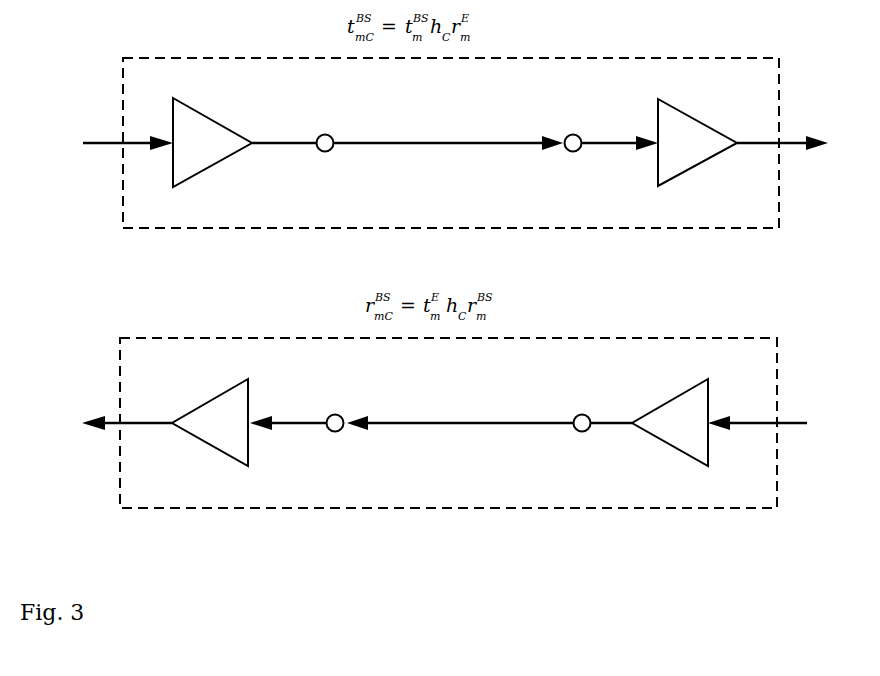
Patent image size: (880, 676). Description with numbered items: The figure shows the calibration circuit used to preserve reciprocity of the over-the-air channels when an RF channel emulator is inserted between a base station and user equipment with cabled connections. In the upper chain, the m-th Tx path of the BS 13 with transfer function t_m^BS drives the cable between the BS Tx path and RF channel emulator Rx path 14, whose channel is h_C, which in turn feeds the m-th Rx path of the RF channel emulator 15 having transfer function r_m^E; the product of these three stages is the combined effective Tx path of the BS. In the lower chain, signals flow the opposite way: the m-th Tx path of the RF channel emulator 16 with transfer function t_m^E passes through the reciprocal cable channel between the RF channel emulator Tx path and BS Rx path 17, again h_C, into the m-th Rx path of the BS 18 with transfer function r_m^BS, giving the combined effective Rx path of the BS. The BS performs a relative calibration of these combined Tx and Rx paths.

The m-th Tx path of the BS 13 is at (212, 146).
The cable between the BS Tx path and RF channel emulator Rx path 14 is at (455, 164).
The m-th Rx path of the RF channel emulator 15 is at (697, 143).
The m-th Tx path of the RF channel emulator 16 is at (670, 425).
The reciprocal cable channel between the RF channel emulator Tx path and BS Rx path 17 is at (441, 443).
The m-th Rx path of the BS 18 is at (210, 433).